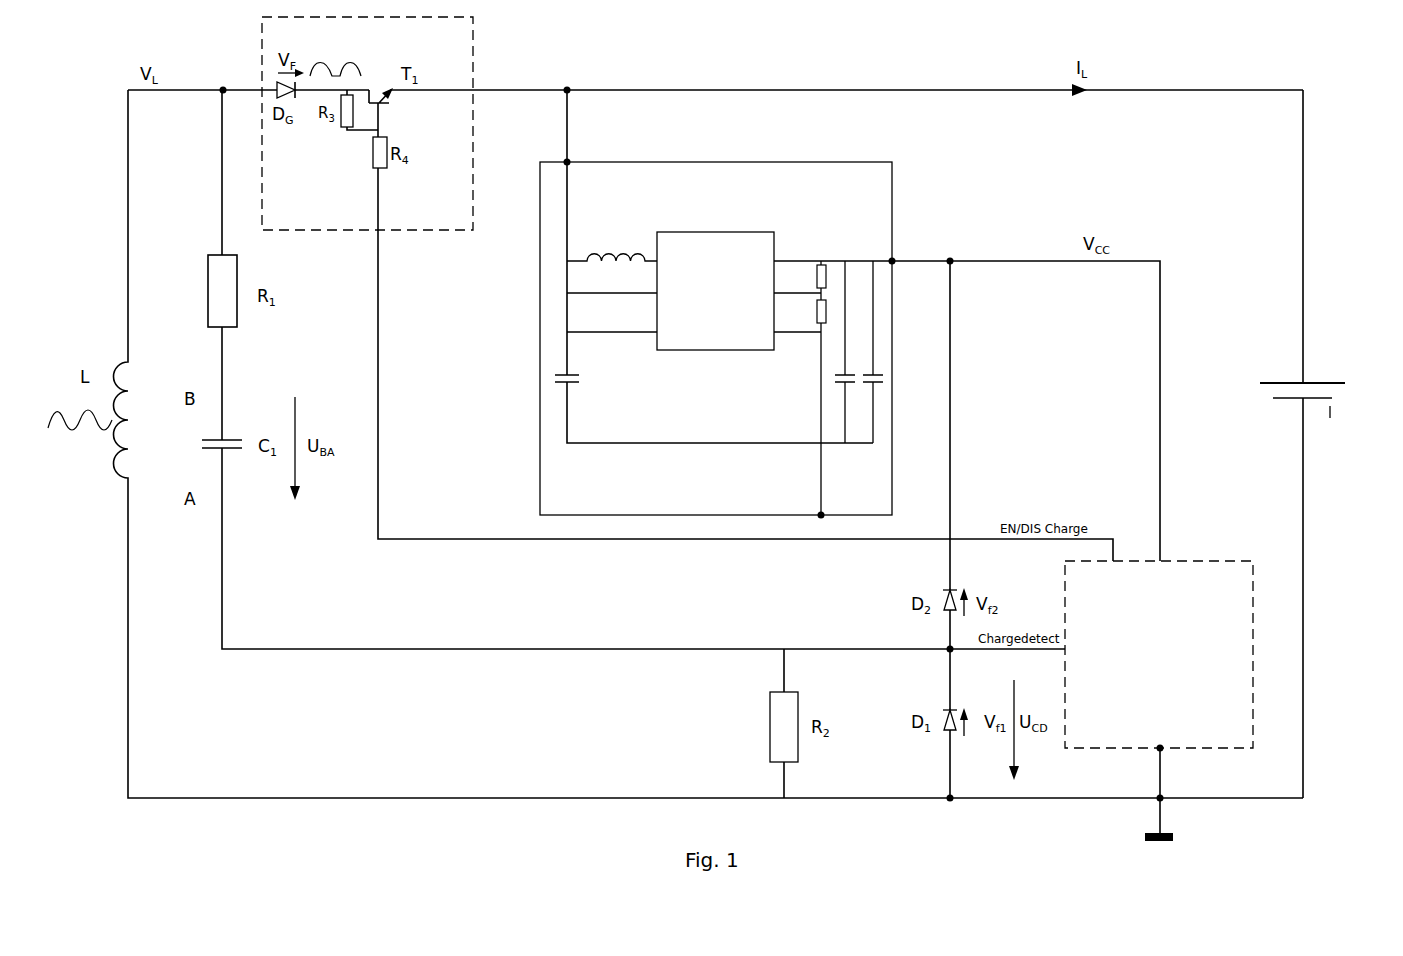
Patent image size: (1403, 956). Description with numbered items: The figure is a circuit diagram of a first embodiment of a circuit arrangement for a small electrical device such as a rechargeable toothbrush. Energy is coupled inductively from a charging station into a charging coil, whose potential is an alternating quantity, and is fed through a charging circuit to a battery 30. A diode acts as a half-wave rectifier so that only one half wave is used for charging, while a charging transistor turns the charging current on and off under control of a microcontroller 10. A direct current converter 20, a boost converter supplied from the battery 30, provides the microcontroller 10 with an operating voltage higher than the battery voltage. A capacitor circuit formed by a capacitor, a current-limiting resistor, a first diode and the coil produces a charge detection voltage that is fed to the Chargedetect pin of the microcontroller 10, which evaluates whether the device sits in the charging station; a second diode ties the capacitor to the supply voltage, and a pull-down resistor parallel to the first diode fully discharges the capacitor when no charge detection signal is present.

The microcontroller 10 is at (1200, 561).
The direct current converter 20 is at (893, 205).
The battery 30 is at (1325, 350).